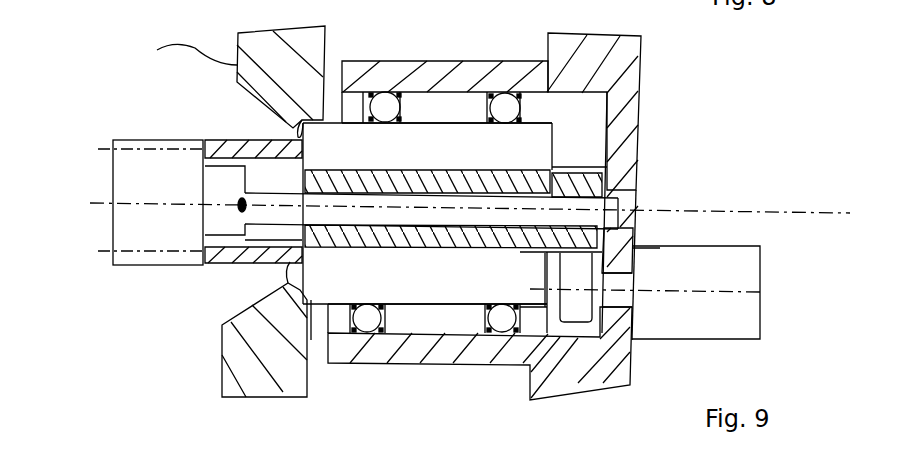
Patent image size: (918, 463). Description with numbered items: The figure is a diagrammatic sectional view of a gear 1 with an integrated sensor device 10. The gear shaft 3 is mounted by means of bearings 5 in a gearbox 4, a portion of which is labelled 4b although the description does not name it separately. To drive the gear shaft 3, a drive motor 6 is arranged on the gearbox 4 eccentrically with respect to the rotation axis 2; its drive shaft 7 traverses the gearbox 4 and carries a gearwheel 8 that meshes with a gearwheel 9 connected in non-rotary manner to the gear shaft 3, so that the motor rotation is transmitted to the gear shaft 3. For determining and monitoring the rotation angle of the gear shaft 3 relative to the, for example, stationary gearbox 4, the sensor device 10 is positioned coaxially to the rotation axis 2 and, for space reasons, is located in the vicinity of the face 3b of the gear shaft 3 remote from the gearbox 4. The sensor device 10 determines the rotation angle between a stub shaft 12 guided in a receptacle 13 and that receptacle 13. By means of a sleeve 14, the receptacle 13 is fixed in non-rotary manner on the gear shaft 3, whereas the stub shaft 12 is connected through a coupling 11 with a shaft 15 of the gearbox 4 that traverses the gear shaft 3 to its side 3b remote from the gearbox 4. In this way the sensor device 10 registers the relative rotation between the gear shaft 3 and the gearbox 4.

The gear 1 is at (696, 108).
The rotation axis 2 is at (762, 212).
The gear shaft 3 is at (251, 35).
The face of the gear shaft 3b is at (157, 48).
The gearbox 4 is at (523, 61).
The housing wall 4b is at (333, 15).
The bearings 5 is at (397, 117).
The drive motor 6 is at (760, 292).
The drive shaft 7 is at (640, 291).
The gearwheel 8 is at (576, 300).
The gearwheel 9 is at (612, 173).
The sensor device 10 is at (103, 178).
The coupling 11 is at (238, 198).
The stub shaft 12 is at (224, 212).
The receptacle 13 is at (133, 224).
The sleeve 14 is at (313, 300).
The shaft 15 is at (412, 212).